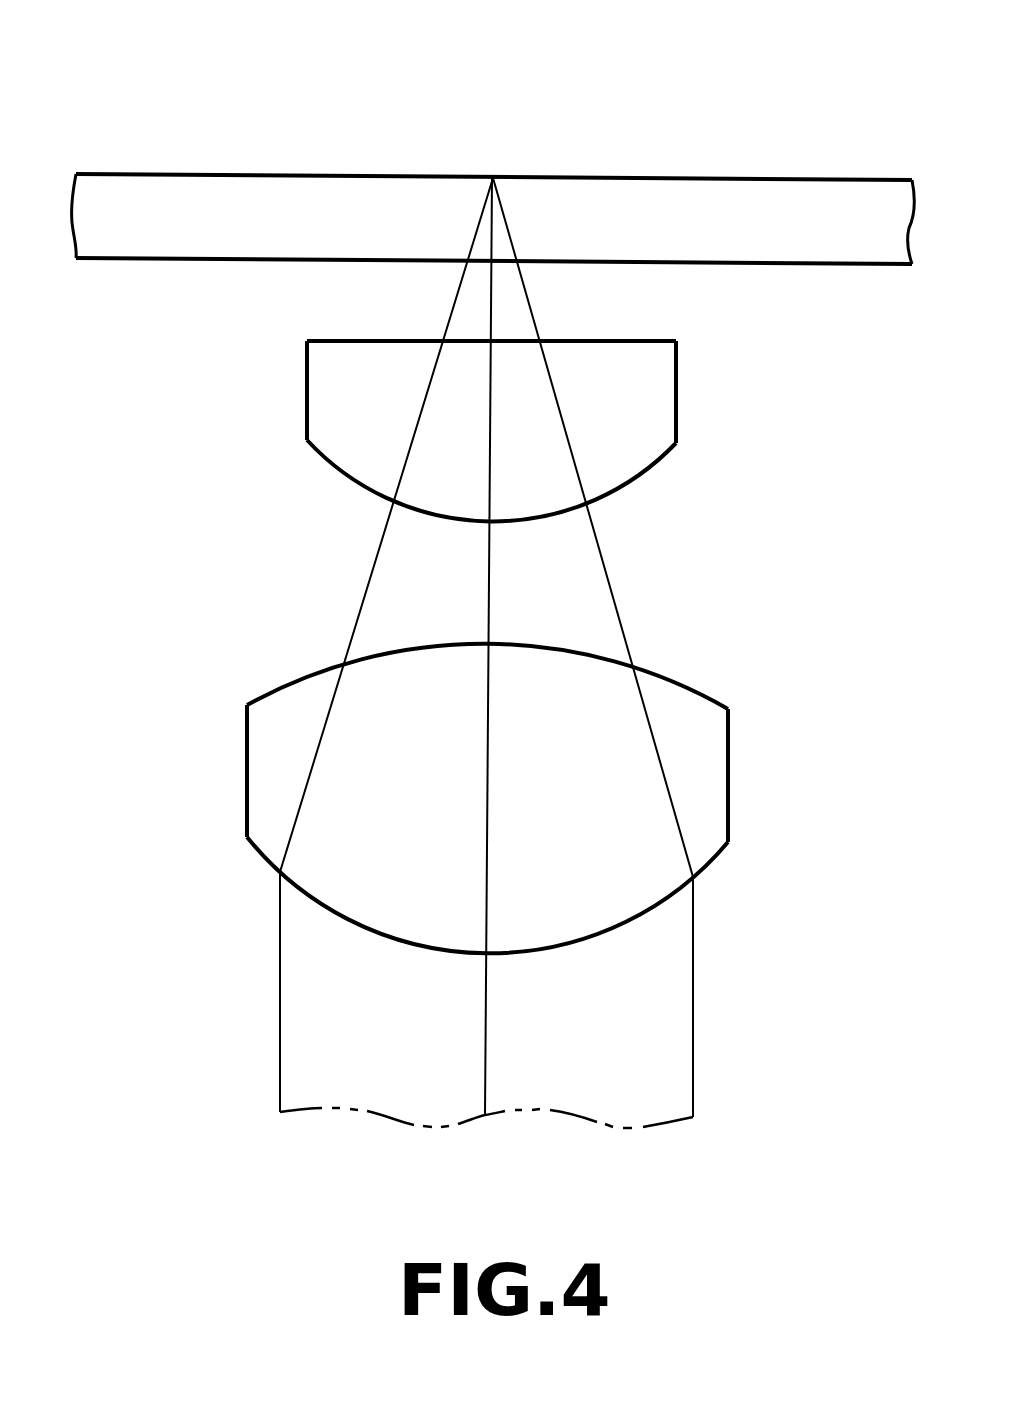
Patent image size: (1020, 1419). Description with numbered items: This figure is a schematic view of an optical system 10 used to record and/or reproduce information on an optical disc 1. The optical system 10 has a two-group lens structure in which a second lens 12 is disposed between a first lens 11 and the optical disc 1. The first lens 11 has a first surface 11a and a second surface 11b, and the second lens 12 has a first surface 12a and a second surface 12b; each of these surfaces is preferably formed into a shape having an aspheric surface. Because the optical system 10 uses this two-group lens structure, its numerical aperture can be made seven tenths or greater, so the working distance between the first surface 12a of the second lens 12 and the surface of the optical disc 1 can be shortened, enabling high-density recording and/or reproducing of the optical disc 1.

The optical disc 1 is at (648, 192).
The optical system 10 is at (790, 111).
The first lens 11 is at (554, 797).
The first surface of the first lens 11a is at (680, 682).
The second surface of the first lens 11b is at (653, 912).
The second lens 12 is at (560, 408).
The first surface of the second lens 12a is at (628, 340).
The second surface of the second lens 12b is at (651, 471).